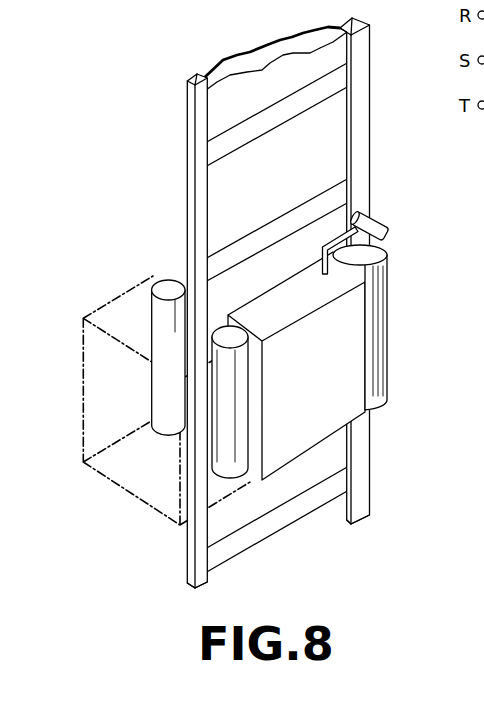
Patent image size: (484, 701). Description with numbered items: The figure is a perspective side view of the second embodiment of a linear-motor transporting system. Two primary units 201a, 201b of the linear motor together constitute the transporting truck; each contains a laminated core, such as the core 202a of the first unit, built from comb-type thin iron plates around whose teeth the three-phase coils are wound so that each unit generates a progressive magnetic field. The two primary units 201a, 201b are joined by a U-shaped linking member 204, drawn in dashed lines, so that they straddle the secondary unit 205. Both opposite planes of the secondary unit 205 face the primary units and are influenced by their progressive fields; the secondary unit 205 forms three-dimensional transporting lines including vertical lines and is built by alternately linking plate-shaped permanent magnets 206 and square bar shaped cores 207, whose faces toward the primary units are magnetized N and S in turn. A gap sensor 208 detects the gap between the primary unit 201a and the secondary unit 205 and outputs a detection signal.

The primary unit 201a is at (376, 416).
The primary unit 201b is at (166, 282).
The core 202a is at (352, 345).
The U-shaped linking member 204 is at (124, 491).
The secondary unit 205 is at (192, 128).
The plate-shaped permanent magnets 206 is at (215, 160).
The square bar shaped cores 207 is at (215, 207).
The gap sensor 208 is at (386, 223).